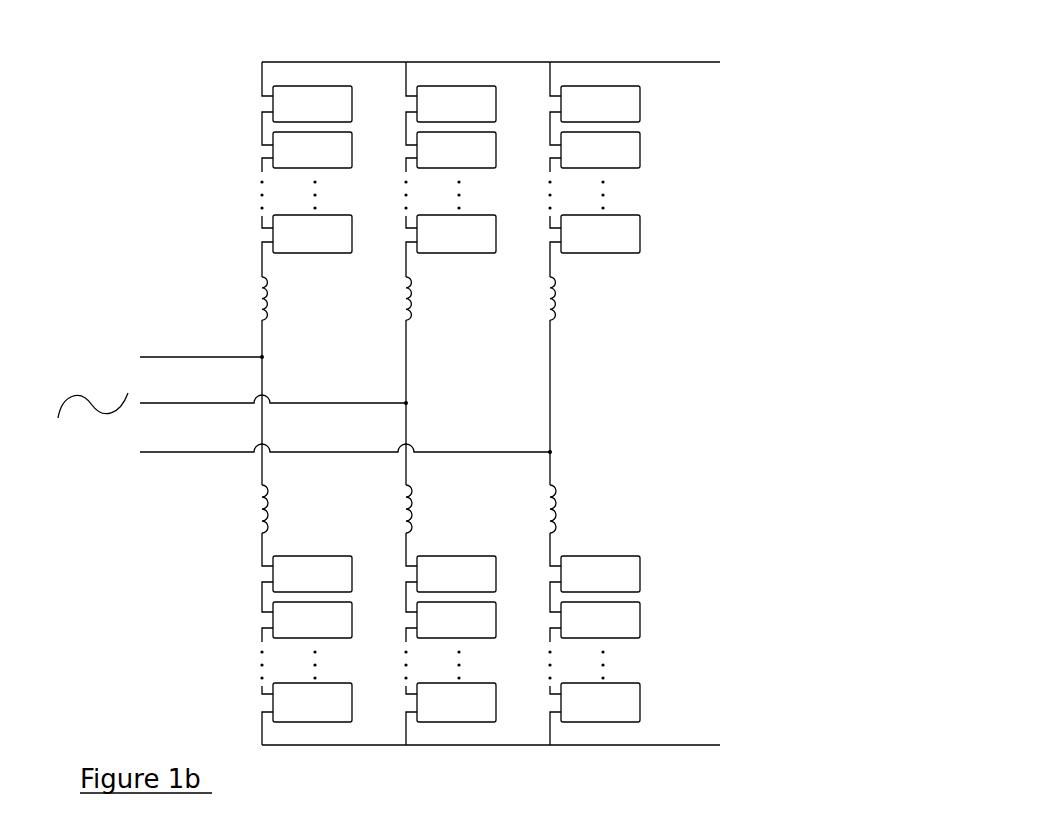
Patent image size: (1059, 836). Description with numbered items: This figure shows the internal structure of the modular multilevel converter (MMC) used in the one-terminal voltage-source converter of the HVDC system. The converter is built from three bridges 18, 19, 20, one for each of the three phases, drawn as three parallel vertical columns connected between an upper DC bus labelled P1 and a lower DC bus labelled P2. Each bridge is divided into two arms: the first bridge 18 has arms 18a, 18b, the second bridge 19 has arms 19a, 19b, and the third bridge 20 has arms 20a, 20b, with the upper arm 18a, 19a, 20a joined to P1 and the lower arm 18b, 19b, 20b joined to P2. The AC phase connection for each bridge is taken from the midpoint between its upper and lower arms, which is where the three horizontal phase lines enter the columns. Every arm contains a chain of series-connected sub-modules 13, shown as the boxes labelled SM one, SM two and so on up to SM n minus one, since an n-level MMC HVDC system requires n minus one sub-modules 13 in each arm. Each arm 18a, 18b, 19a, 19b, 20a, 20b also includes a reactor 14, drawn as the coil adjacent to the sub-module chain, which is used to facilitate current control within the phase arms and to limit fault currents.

The sub-modules 13 is at (258, 232).
The reactor 14 is at (256, 303).
The bridge 18 is at (262, 60).
The arm 18a is at (262, 68).
The arm 18b is at (263, 728).
The bridge 19 is at (406, 60).
The arm 19a is at (406, 366).
The arm 19b is at (407, 728).
The bridge 20 is at (550, 60).
The arm 20a is at (550, 366).
The arm 20b is at (551, 728).
The first DC terminal P1 is at (495, 49).
The second DC terminal P2 is at (496, 763).